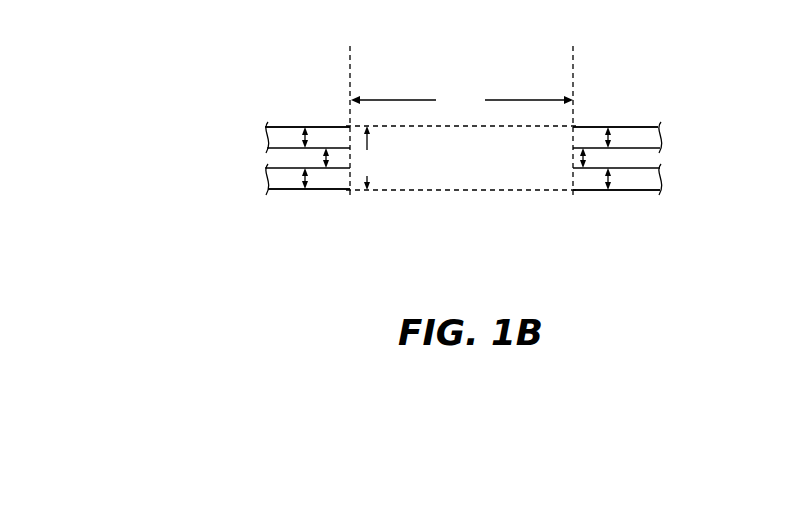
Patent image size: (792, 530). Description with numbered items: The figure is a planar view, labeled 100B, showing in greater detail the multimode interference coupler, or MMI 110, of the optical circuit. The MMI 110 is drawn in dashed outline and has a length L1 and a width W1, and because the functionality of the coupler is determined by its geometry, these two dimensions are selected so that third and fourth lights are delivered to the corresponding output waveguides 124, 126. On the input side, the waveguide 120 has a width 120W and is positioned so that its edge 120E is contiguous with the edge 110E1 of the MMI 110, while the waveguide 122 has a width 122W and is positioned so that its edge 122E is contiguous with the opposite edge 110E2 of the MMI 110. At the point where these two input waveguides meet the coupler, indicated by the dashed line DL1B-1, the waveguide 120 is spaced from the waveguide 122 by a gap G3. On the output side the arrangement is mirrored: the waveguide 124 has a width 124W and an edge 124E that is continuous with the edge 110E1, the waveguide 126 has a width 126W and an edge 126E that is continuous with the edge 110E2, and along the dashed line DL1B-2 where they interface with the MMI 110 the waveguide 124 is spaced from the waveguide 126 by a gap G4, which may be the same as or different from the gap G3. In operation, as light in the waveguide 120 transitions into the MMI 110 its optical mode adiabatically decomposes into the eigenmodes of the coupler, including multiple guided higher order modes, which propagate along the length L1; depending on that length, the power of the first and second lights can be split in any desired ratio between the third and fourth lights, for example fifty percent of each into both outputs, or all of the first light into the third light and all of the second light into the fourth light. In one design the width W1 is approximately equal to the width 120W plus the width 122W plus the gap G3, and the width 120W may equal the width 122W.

The semiconductor structure 100B is at (207, 36).
The MMI coupler 110 is at (478, 170).
The edge of the MMI 110E1 is at (417, 122).
The edge of the MMI 110E2 is at (412, 191).
The dashed line DL1B-1 is at (352, 62).
The dashed line DL1B-2 is at (572, 62).
The length of the MMI L1 is at (462, 103).
The width of the MMI W1 is at (370, 158).
The waveguide 120 is at (268, 135).
The width of waveguide 120 120W is at (305, 125).
The edge of waveguide 120 120E is at (340, 125).
The waveguide 122 is at (268, 172).
The width of waveguide 122 122W is at (305, 192).
The edge of waveguide 122 122E is at (282, 192).
The gap G3 is at (327, 158).
The output waveguide 124 is at (660, 135).
The width of waveguide 124 124W is at (610, 125).
The edge of waveguide 124 124E is at (648, 122).
The output waveguide 126 is at (660, 178).
The width of waveguide 126 126W is at (603, 191).
The edge of waveguide 126 126E is at (635, 192).
The gap G4 is at (583, 170).